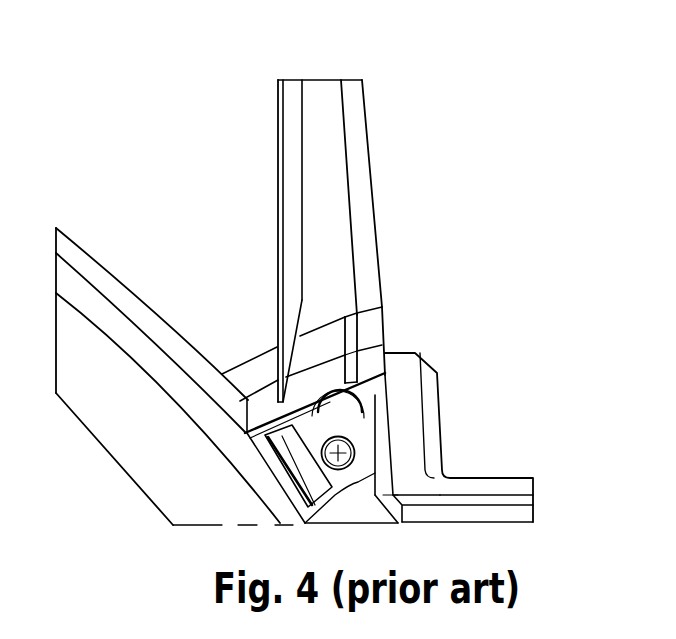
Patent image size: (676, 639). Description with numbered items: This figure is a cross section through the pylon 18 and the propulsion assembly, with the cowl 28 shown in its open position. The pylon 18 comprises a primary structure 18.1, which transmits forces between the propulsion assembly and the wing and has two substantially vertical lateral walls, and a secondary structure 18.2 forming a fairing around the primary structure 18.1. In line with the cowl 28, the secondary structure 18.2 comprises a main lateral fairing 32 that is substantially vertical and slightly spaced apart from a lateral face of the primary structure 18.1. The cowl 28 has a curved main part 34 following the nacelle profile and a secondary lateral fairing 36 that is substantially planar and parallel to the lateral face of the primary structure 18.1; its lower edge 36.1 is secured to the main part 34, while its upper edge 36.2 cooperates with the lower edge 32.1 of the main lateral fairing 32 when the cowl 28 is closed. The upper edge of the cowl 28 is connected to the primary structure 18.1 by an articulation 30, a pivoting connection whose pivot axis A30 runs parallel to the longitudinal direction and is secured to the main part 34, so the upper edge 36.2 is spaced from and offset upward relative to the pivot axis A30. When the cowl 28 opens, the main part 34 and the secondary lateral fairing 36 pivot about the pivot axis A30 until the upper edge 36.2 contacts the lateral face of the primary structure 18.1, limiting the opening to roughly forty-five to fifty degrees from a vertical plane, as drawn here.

The pylon 18 is at (532, 58).
The primary structure 18.1 is at (350, 168).
The secondary structure 18.2 is at (277, 125).
The cowl 28 is at (128, 281).
The articulation 30 is at (348, 468).
The pivot axis A30 is at (354, 455).
The main lateral fairing 32 is at (278, 185).
The lower edge of the main lateral fairing 32.1 is at (267, 395).
The curved main part 34 is at (97, 302).
The secondary lateral fairing 36 is at (232, 373).
The lower edge of the secondary lateral fairing 36.1 is at (247, 415).
The upper edge of the secondary lateral fairing 36.2 is at (383, 328).